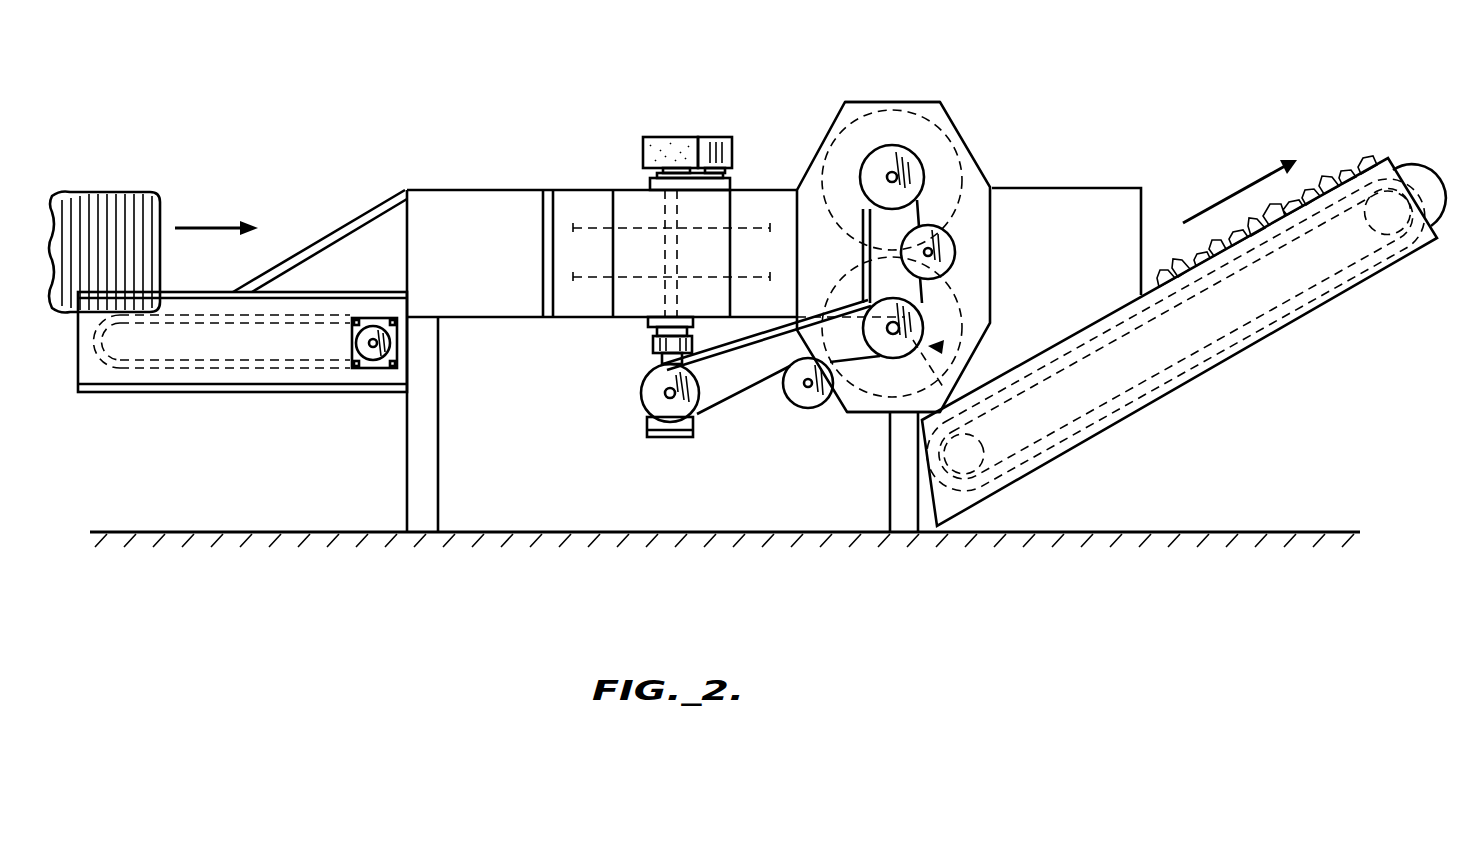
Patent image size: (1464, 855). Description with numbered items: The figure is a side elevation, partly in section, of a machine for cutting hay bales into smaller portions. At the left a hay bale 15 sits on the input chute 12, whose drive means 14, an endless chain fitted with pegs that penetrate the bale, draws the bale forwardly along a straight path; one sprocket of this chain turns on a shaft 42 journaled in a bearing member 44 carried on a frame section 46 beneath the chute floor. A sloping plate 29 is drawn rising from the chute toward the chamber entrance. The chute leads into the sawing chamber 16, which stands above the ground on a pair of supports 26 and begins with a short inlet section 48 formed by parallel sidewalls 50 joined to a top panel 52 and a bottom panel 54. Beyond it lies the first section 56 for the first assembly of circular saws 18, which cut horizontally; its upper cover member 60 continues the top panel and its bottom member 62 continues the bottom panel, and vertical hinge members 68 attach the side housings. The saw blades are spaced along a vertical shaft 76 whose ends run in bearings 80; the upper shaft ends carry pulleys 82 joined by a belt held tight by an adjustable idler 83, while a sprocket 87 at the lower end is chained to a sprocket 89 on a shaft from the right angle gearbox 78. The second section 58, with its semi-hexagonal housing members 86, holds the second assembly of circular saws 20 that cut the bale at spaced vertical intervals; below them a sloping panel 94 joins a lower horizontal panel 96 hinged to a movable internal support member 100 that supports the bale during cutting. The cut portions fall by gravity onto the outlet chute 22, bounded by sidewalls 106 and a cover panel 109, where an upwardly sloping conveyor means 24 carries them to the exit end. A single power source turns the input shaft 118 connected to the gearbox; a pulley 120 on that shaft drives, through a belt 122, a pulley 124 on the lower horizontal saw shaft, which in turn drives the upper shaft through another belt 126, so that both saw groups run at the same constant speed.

The input chute 12 is at (239, 372).
The drive means 14 is at (158, 363).
The hay bale 15 is at (130, 193).
The sawing chamber 16 is at (673, 113).
The first assembly of circular saws 18 is at (597, 237).
The second assembly of circular saws 20 is at (990, 205).
The outlet chute 22 is at (1180, 317).
The conveyor means 24 is at (1406, 172).
The supports 26 is at (425, 509).
The ramp plate 29 is at (335, 271).
The shaft 42 is at (373, 357).
The bearing member 44 is at (352, 338).
The frame section 46 is at (285, 393).
The inlet section 48 is at (440, 190).
The sidewalls 50 is at (424, 236).
The top panel 52 is at (510, 188).
The bottom panel 54 is at (450, 317).
The first section 56 is at (709, 92).
The second section 58 is at (843, 105).
The upper cover member 60 is at (583, 188).
The bottom member 62 is at (577, 320).
The vertical hinge members 68 is at (543, 250).
The vertical shaft 76 is at (667, 210).
The right angle gearbox 78 is at (643, 425).
The bearings 80 is at (648, 183).
The pulleys 82 is at (658, 135).
The adjustable idler 83 is at (720, 135).
The semi-hexagonal housing members 86 is at (922, 102).
The sprocket 87 is at (650, 340).
The sprocket 89 is at (647, 350).
The panel 94 is at (828, 420).
The lower horizontal panel 96 is at (873, 422).
The internal support member 100 is at (975, 335).
The sidewalls 106 is at (1108, 373).
The cover panel 109 is at (1087, 188).
The input shaft 118 is at (660, 440).
The pulley 120 is at (620, 408).
The belt 122 is at (727, 407).
The pulley 124 is at (923, 318).
The belt 126 is at (862, 250).